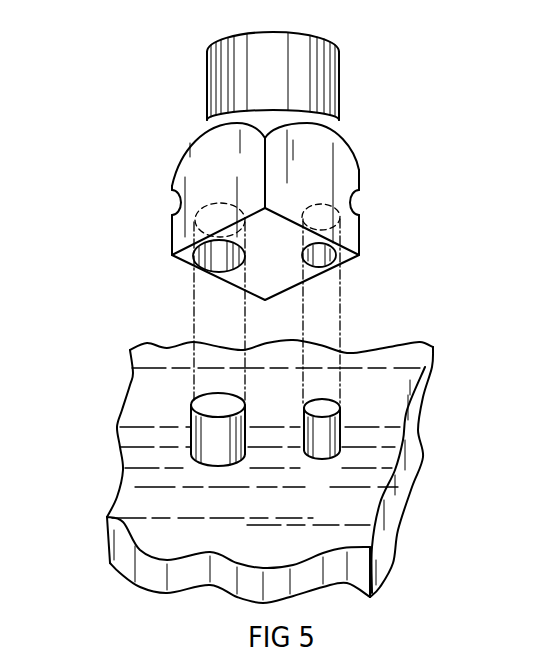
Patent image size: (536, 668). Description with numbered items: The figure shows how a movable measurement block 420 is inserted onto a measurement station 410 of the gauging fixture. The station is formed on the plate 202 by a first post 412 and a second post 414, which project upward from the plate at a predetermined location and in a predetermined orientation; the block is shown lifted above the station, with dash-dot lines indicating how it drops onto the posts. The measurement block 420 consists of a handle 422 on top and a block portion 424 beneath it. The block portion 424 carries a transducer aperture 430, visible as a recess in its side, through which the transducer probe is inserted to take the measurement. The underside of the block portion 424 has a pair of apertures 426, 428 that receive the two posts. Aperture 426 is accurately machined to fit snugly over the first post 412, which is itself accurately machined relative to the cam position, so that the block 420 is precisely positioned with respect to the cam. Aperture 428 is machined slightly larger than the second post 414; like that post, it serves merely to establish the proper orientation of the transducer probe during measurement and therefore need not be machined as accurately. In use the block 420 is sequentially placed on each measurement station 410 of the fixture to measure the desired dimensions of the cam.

The measurement block 420 is at (165, 100).
The handle 422 is at (323, 83).
The block portion 424 is at (340, 170).
The transducer aperture 430 is at (352, 200).
The aperture 426 is at (215, 262).
The aperture 428 is at (333, 268).
The plate 202 is at (147, 503).
The measurement station 410 is at (267, 501).
The first post 412 is at (195, 440).
The second post 414 is at (313, 440).